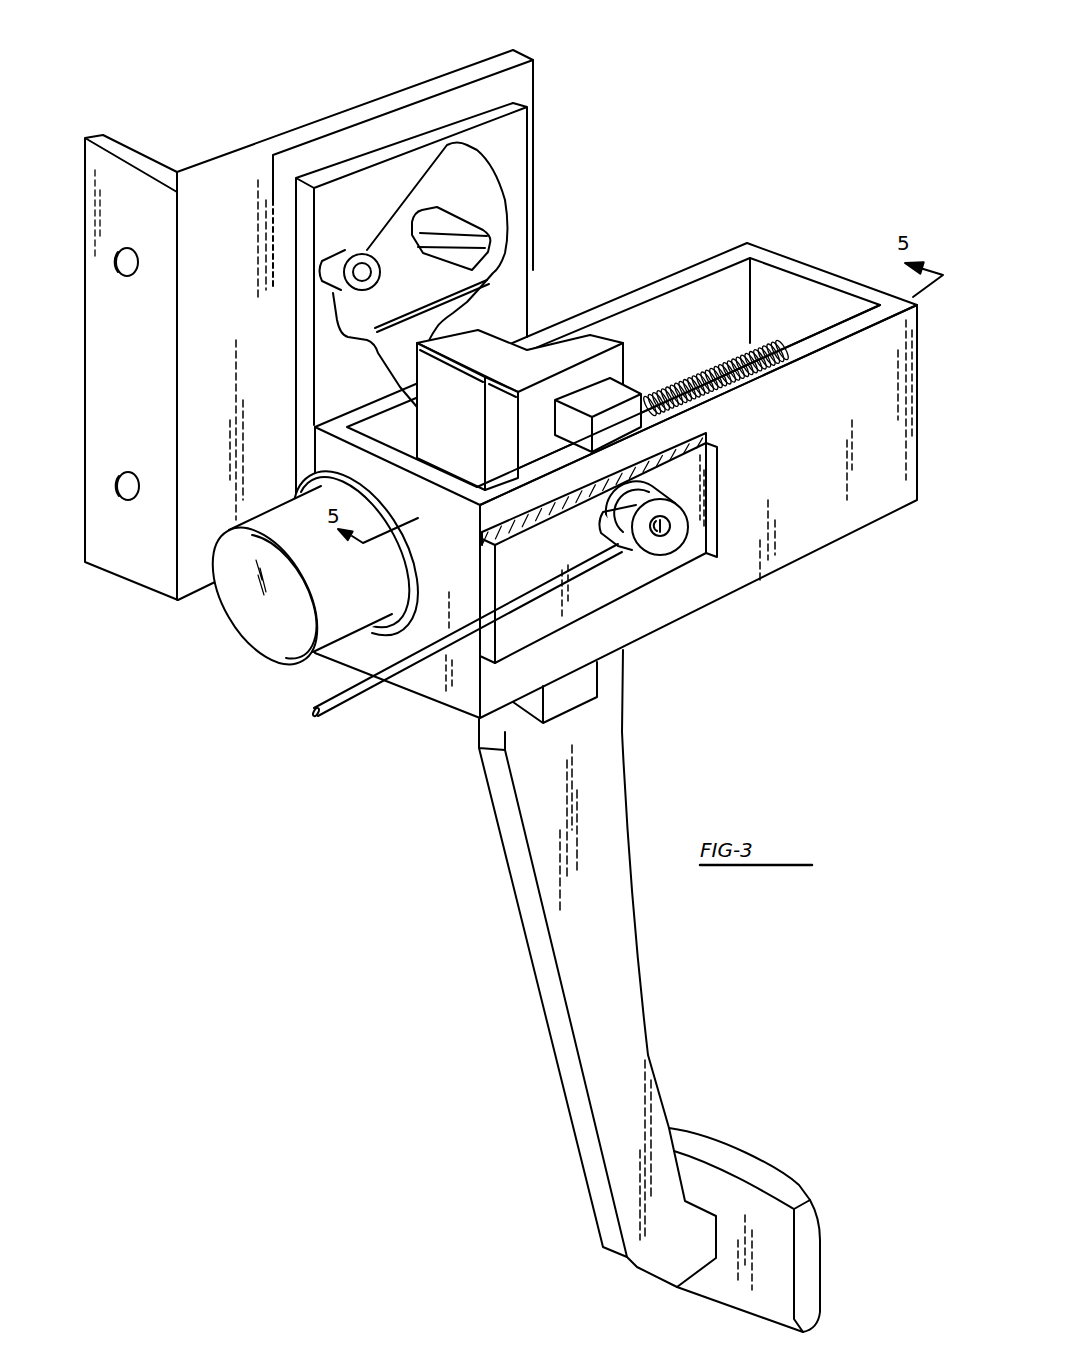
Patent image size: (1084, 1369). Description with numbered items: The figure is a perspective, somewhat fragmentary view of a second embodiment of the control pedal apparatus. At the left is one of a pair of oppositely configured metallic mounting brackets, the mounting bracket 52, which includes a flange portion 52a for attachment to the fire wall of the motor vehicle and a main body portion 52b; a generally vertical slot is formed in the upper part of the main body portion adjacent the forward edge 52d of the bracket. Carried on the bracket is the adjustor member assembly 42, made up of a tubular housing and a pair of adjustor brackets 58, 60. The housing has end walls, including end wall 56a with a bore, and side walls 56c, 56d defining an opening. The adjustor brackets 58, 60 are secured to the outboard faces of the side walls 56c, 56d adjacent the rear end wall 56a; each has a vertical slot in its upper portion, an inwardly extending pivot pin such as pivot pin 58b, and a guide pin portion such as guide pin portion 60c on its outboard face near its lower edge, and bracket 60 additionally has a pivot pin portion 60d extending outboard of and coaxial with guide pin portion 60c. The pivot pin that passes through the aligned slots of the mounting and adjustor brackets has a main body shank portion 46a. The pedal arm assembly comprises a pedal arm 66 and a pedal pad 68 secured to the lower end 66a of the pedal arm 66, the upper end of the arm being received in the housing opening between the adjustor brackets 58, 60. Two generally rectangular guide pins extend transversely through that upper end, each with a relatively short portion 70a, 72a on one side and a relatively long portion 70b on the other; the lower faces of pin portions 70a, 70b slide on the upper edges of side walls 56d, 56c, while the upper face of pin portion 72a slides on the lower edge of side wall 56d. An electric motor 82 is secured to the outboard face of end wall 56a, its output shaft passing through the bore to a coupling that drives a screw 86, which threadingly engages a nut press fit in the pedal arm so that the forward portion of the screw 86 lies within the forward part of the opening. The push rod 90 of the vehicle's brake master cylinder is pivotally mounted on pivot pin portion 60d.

The adjustor member assembly 42 is at (616, 427).
The main body shank portion 46a is at (460, 230).
The left mounting bracket 52 is at (364, 300).
The flange portion 52a is at (147, 143).
The main body portion 52b is at (413, 82).
The forward edge 52d is at (537, 187).
The end wall 56a is at (442, 521).
The side wall 56c is at (712, 331).
The side wall 56d is at (866, 414).
The adjustor bracket 58 is at (414, 282).
The pivot pin 58b is at (372, 267).
The adjustor bracket 60 is at (601, 548).
The guide pin portion 60c is at (610, 513).
The pivot pin portion 60d is at (673, 533).
The pedal arm 66 is at (626, 991).
The lower end 66a is at (588, 1149).
The pedal pad 68 is at (784, 1173).
The short portion 70a is at (627, 393).
The long portion 70b is at (500, 345).
The short portion 72a is at (593, 673).
The electric motor 82 is at (343, 582).
The screw 86 is at (763, 337).
The push rod 90 is at (372, 692).